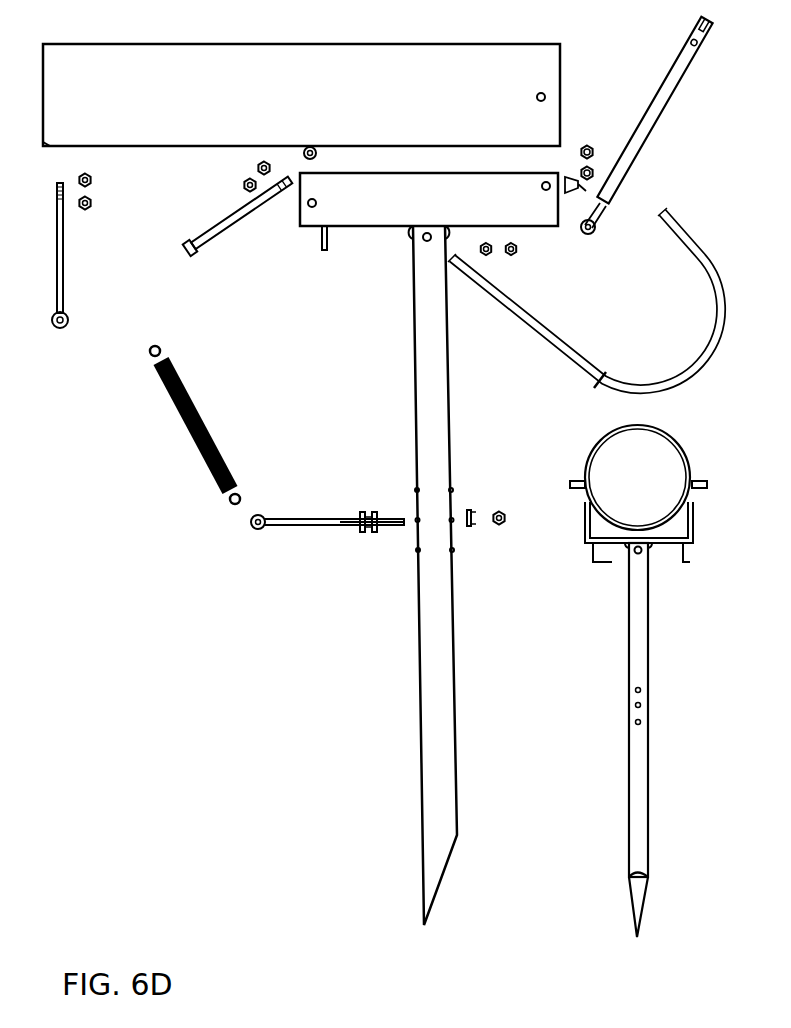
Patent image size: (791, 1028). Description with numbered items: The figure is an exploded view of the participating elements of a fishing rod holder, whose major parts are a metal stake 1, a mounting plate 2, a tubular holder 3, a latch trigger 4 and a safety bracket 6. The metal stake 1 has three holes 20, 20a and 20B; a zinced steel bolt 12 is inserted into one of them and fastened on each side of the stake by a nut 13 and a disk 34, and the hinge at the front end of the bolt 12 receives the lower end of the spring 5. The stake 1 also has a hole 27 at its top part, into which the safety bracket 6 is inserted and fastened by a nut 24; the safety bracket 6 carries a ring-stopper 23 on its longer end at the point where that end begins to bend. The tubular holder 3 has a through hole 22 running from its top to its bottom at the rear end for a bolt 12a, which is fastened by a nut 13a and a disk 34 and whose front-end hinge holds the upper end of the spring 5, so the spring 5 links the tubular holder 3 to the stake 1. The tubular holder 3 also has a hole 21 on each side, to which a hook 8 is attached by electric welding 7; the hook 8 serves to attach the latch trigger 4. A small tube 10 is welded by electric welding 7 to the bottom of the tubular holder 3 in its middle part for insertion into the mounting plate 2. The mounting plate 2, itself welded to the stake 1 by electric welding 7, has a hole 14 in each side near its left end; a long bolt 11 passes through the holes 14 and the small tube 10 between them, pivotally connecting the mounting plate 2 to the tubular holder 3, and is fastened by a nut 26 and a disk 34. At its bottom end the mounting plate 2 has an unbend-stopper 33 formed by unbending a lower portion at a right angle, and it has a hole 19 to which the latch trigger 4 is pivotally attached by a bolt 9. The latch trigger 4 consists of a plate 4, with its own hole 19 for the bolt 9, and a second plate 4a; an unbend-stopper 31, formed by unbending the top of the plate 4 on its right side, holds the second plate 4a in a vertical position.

The metal stake 1 is at (420, 412).
The mounting plate 2 is at (702, 527).
The tubular holder 3 is at (181, 135).
The latch trigger 4 is at (604, 210).
The second plate 4a is at (650, 132).
The spring 5 is at (203, 419).
The safety bracket 6 is at (705, 370).
The electric welding 7 is at (405, 236).
The hook 8 is at (708, 484).
The bolt 9 is at (593, 163).
The small tube 10 is at (317, 155).
The bolt 11 is at (228, 223).
The bolt 12 is at (285, 518).
The bolt 12a is at (66, 279).
The nut 13 is at (358, 512).
The nut 13a is at (92, 180).
The hole 14 is at (307, 206).
The hole 19 is at (546, 182).
The hole 20 is at (416, 491).
The hole 20a is at (416, 522).
The hole 20B is at (416, 553).
The hole 21 is at (560, 82).
The through hole 22 is at (50, 149).
The ring-stopper 23 is at (601, 375).
The nut 24 is at (510, 256).
The nut 26 is at (257, 166).
The hole 27 is at (423, 241).
The unbend-stopper 31 is at (717, 26).
The unbend-stopper 33 is at (321, 241).
The disk 34 is at (243, 185).